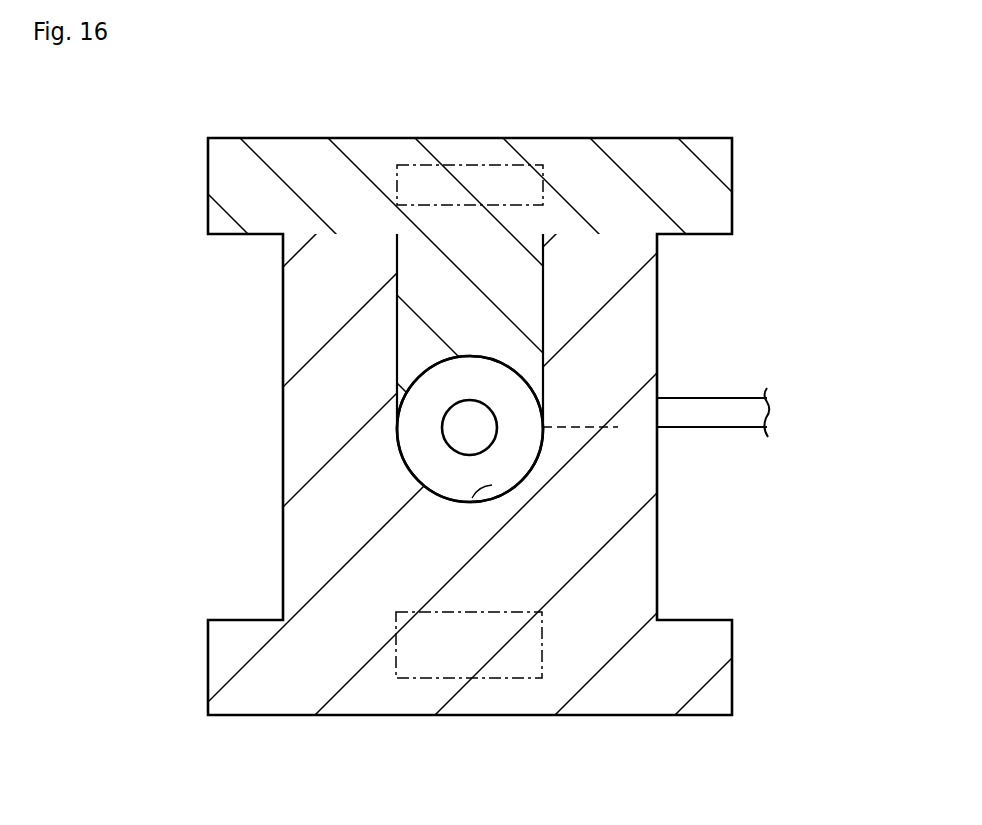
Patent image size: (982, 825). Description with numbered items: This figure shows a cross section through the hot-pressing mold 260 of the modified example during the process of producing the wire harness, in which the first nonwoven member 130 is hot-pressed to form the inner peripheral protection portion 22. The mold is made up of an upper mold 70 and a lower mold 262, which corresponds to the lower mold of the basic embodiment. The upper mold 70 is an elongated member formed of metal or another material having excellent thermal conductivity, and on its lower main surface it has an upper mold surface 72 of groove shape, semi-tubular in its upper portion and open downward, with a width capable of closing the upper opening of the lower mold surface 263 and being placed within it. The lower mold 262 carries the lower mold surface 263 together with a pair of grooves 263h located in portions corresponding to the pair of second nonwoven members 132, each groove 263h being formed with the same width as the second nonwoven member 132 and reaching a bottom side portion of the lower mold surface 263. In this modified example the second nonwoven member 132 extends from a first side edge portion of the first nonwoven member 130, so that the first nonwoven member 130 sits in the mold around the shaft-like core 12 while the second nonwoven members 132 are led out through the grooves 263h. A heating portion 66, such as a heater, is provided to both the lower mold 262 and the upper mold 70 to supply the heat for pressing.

The hot-pressing mold 260 is at (540, 100).
The upper mold 70 is at (732, 173).
The lower mold 262 is at (733, 667).
The upper mold surface 72 is at (468, 355).
The inner peripheral protection portion 22 is at (417, 378).
The first nonwoven member 130 is at (417, 441).
The shaft 12 is at (497, 423).
The second nonwoven member 132 is at (740, 397).
The grooves 263h is at (600, 427).
The lower mold surface 263 is at (492, 485).
The heating portion 66 is at (451, 165).